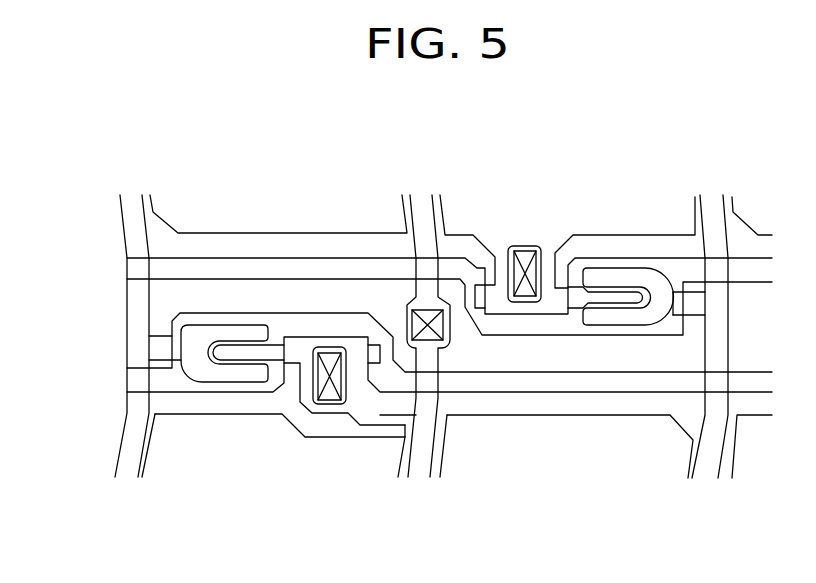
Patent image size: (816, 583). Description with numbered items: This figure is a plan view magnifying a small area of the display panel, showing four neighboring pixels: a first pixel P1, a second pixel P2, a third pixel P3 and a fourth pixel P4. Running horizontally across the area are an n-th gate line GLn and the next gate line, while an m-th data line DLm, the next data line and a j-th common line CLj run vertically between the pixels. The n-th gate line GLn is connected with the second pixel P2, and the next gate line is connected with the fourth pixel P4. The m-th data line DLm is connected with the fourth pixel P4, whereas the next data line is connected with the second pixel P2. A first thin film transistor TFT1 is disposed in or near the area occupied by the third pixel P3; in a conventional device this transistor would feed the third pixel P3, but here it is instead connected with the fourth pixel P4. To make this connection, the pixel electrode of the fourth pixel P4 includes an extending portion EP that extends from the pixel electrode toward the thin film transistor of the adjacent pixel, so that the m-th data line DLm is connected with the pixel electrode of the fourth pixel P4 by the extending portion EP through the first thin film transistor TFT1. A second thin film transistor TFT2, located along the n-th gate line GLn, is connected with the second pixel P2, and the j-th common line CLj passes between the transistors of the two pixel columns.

The n-th gate line GLn is at (133, 269).
The m-th data line DLm is at (130, 467).
The first thin film transistor TFT1 is at (229, 385).
The second thin film transistor TFT2 is at (630, 330).
The extending portion EP is at (382, 418).
The j-th common line CLj is at (420, 468).
The first pixel P1 is at (278, 214).
The second pixel P2 is at (567, 251).
The third pixel P3 is at (273, 445).
The fourth pixel P4 is at (566, 446).